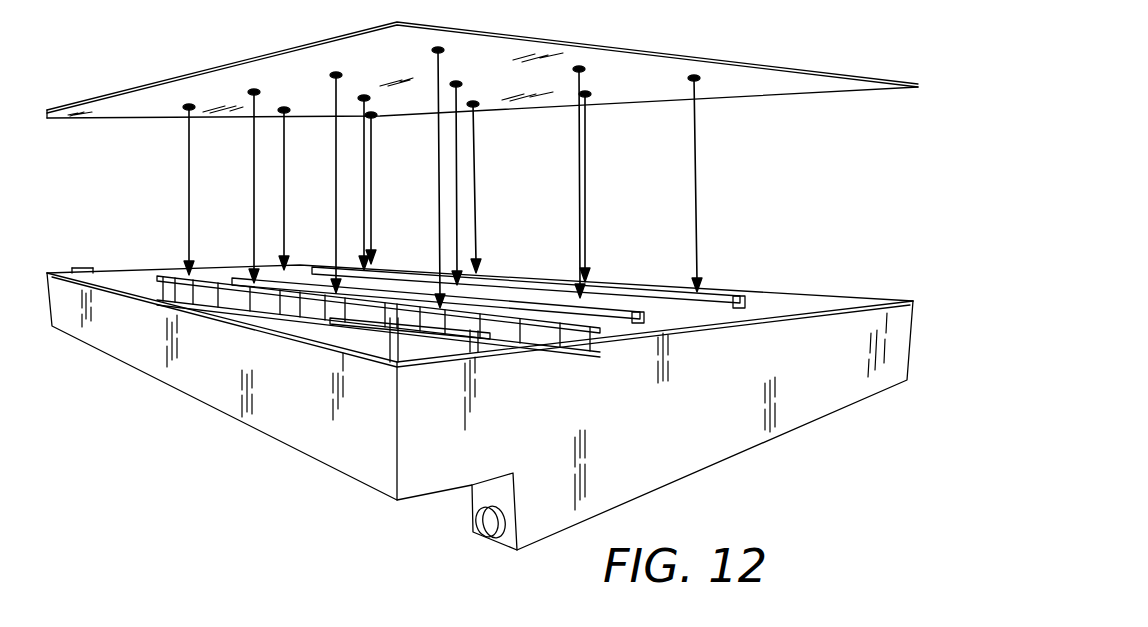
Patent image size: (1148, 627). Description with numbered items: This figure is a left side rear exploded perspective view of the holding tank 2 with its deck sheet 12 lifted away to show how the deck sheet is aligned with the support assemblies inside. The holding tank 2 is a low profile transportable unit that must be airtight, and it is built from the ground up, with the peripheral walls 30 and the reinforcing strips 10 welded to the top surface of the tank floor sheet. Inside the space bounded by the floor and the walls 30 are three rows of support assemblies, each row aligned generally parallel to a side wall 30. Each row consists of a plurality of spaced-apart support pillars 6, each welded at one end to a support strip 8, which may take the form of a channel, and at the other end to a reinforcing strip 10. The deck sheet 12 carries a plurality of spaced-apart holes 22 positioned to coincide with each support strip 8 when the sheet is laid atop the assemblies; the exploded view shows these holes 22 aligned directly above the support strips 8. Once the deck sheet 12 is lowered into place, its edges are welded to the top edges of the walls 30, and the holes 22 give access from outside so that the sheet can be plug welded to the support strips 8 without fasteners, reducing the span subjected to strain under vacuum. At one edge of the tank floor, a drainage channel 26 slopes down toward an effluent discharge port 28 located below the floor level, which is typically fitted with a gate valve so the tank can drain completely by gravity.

The holding tank 2 is at (812, 440).
The deck sheet 12 is at (816, 68).
The holes 22 is at (582, 75).
The walls 30 is at (353, 467).
The support strip 8 is at (597, 294).
The reinforcing strip 10 is at (377, 318).
The support pillar 6 is at (514, 316).
The effluent discharge port 28 is at (478, 538).
The drainage channel 26 is at (510, 546).